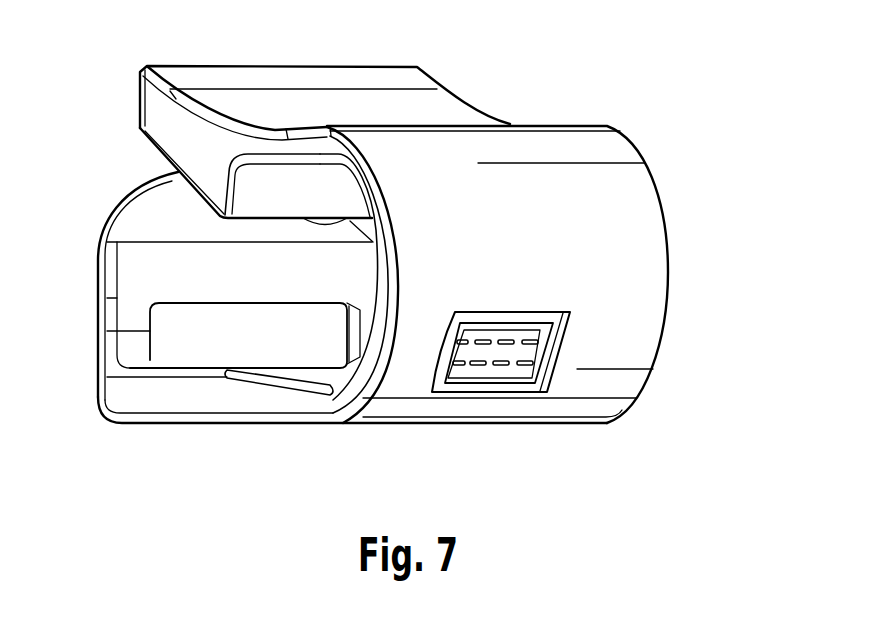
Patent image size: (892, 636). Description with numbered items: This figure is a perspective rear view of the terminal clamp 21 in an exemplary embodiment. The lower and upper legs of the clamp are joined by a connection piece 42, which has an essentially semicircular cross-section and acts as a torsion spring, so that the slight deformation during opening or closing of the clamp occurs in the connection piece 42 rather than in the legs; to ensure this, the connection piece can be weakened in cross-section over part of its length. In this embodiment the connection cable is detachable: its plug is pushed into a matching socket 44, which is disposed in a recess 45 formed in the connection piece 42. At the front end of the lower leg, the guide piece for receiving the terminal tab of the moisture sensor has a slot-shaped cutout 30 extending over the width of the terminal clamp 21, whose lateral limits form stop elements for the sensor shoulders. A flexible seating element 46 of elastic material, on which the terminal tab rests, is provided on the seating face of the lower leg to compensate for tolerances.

The terminal clamp 21 is at (512, 119).
The connection piece 42 is at (642, 220).
The socket 44 is at (473, 372).
The recess 45 is at (572, 323).
The flexible seating element 46 is at (197, 364).
The slot-shaped cutout 30 is at (180, 318).